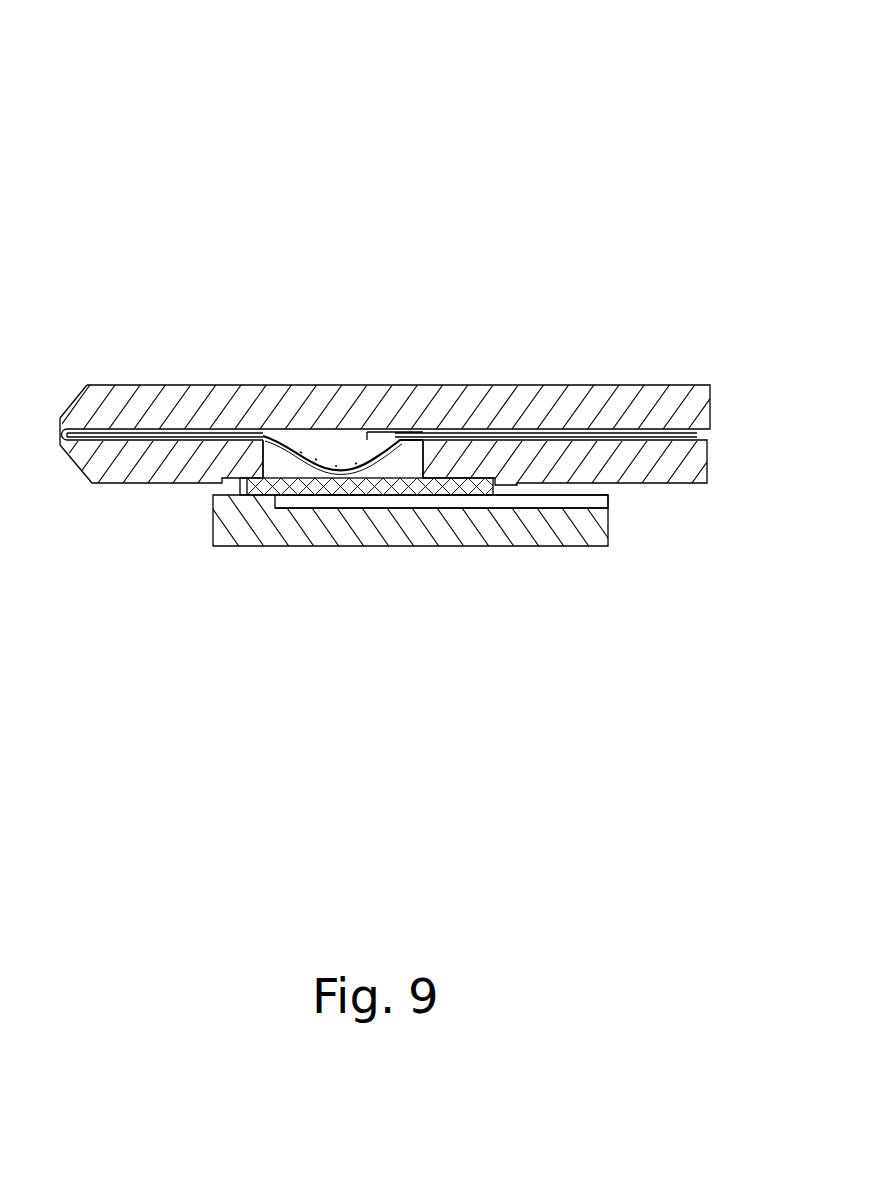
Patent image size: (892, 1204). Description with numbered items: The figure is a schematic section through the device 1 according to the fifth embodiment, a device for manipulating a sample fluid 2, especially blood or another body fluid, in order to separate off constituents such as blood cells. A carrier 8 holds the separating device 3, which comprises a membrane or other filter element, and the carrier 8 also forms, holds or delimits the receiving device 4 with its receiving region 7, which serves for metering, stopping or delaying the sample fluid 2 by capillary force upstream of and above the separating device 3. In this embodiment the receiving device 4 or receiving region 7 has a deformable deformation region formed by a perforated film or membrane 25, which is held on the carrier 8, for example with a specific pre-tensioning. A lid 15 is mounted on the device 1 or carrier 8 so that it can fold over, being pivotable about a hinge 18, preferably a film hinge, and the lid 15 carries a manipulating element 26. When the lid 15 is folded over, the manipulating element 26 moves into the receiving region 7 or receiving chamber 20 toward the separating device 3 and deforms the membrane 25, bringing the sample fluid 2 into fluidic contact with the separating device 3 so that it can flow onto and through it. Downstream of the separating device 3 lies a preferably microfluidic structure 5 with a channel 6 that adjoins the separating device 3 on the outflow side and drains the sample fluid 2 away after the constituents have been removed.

The device 1 is at (146, 164).
The lid 15 is at (127, 397).
The manipulating element 26 is at (335, 442).
The receiving device 4 is at (388, 327).
The receiving region 7 is at (376, 420).
The sample fluid 2 is at (452, 470).
The hinge 18 is at (58, 428).
The carrier 8 is at (150, 467).
The separating device 3 is at (293, 492).
The membrane 25 is at (380, 463).
The receiving chamber 20 is at (410, 467).
The structure 5 is at (533, 545).
The channel 6 is at (600, 498).